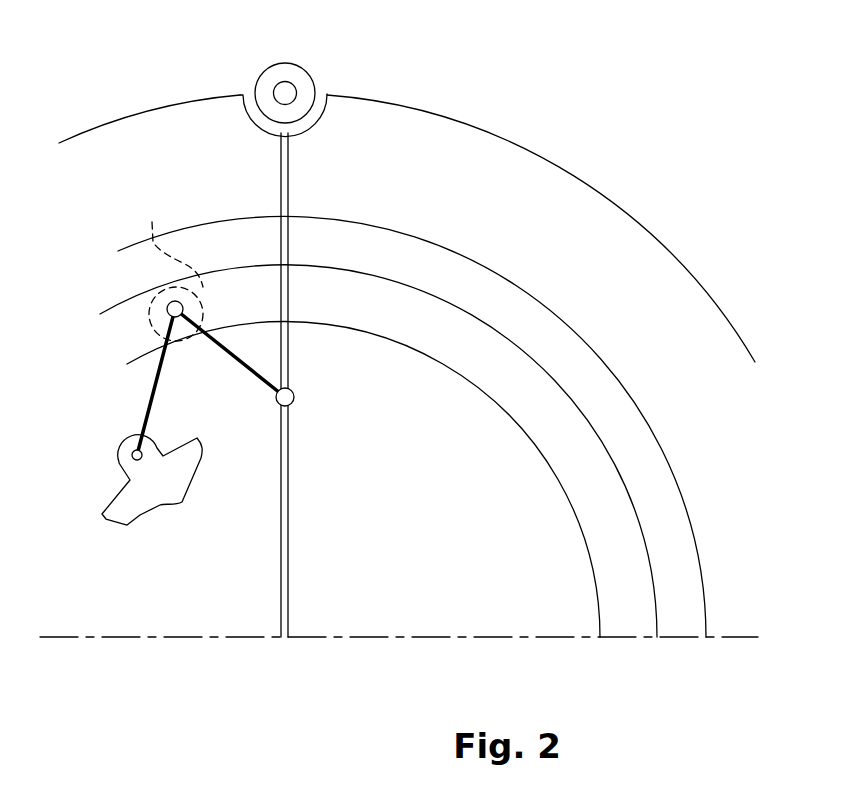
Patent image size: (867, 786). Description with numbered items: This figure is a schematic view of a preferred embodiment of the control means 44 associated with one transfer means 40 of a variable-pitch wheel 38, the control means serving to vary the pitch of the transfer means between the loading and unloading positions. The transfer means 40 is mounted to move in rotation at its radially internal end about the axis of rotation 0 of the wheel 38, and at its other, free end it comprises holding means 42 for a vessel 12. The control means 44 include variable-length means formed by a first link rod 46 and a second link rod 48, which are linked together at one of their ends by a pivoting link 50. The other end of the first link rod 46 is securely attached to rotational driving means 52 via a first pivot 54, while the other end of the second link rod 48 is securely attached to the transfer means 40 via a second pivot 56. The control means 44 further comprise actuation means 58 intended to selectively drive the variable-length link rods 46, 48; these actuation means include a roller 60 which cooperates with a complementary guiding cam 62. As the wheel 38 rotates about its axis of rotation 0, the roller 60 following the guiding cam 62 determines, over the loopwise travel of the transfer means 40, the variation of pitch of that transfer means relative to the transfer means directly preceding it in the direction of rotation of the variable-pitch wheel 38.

The axis of rotation 0 is at (285, 637).
The vessel 12 is at (299, 84).
The variable-pitch wheel 38 is at (517, 186).
The transfer means 40 is at (284, 273).
The holding means 42 is at (336, 112).
The control means 44 is at (198, 395).
The first link rod 46 is at (150, 392).
The second link rod 48 is at (240, 368).
The pivoting link 50 is at (166, 311).
The rotational driving means 52 is at (160, 448).
The first pivot 54 is at (130, 455).
The second pivot 56 is at (295, 400).
The actuation means 58 is at (122, 236).
The roller 60 is at (170, 268).
The guiding cam 62 is at (263, 267).